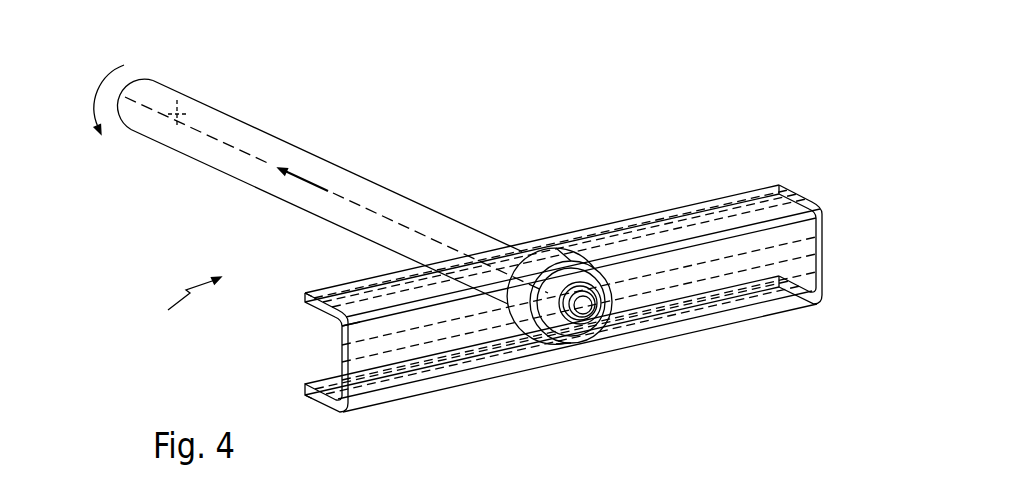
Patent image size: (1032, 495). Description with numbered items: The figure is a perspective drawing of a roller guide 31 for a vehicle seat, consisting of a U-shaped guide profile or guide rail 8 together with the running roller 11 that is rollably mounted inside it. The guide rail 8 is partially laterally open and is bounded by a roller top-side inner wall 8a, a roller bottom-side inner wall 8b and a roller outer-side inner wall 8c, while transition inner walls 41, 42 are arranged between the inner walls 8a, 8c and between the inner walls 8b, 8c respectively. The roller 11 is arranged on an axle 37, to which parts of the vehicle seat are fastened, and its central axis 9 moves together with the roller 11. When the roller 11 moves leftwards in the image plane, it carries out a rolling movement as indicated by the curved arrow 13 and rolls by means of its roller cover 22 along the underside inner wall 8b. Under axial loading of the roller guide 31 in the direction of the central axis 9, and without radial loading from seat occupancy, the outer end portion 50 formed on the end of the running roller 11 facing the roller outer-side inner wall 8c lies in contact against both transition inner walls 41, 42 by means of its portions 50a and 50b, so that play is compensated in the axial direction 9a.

The guide rail 8 is at (567, 291).
The roller top-side inner wall 8a is at (525, 235).
The roller bottom-side inner wall 8b is at (535, 357).
The roller outer-side inner wall 8c is at (553, 281).
The central axis 9 is at (304, 172).
The axial direction 9a is at (305, 180).
The roller 11 is at (548, 220).
The curved arrow 13 is at (106, 72).
The roller cover 22 is at (630, 207).
The roller guide 31 is at (182, 302).
The axle 37 is at (217, 116).
The transition inner wall 41 is at (326, 294).
The transition inner wall 42 is at (333, 401).
The outer end portion 50 is at (567, 318).
The portion of outer end portion 50a is at (580, 263).
The portion of outer end portion 50b is at (580, 350).